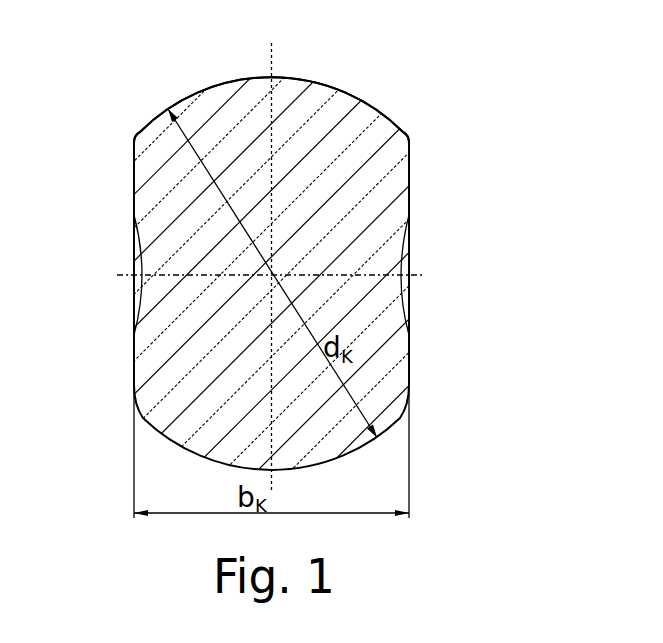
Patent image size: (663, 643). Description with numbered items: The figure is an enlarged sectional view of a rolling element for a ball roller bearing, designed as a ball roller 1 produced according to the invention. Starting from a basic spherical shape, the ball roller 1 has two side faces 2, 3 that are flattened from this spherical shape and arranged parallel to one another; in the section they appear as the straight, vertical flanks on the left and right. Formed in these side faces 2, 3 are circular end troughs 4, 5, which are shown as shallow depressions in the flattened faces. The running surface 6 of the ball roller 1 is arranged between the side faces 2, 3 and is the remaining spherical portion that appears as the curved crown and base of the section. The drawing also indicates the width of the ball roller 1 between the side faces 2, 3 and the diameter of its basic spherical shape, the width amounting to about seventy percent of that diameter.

The ball roller 1 is at (271, 235).
The side face 2 is at (133, 167).
The side face 3 is at (411, 168).
The end trough 4 is at (138, 258).
The end trough 5 is at (405, 252).
The running surface 6 is at (316, 81).